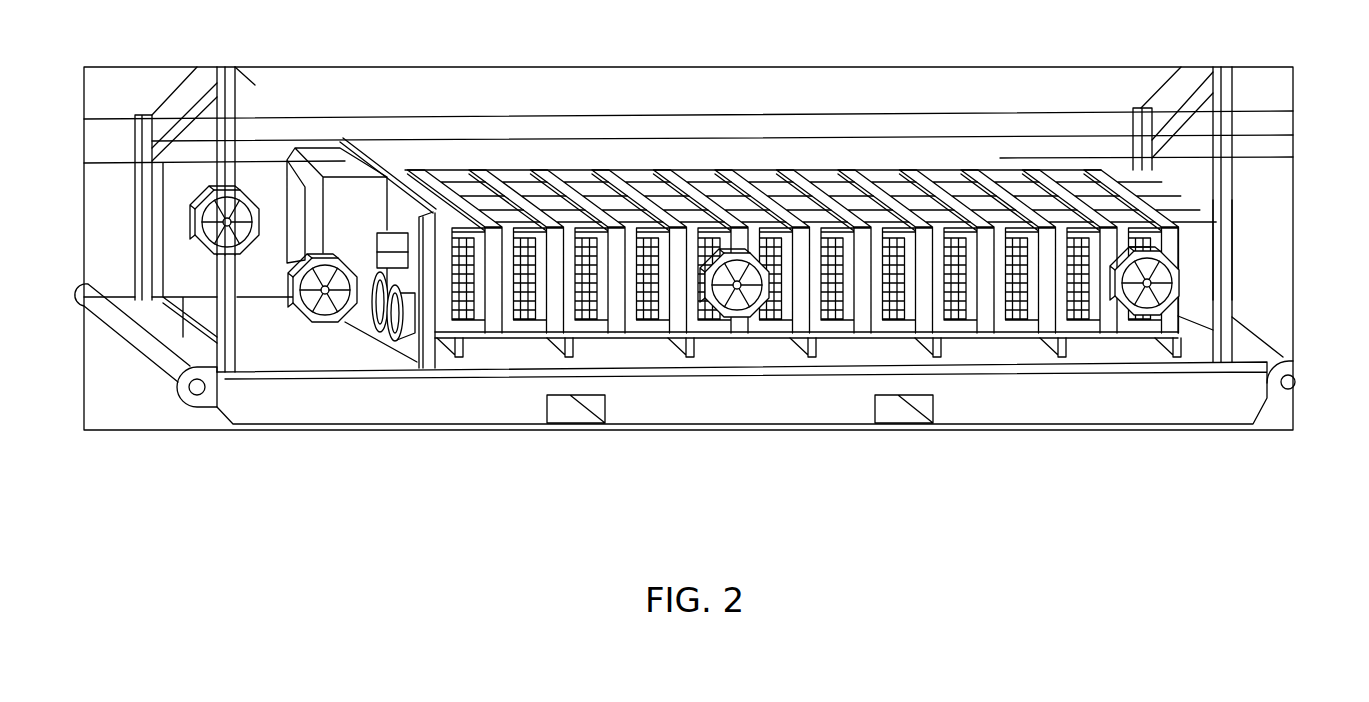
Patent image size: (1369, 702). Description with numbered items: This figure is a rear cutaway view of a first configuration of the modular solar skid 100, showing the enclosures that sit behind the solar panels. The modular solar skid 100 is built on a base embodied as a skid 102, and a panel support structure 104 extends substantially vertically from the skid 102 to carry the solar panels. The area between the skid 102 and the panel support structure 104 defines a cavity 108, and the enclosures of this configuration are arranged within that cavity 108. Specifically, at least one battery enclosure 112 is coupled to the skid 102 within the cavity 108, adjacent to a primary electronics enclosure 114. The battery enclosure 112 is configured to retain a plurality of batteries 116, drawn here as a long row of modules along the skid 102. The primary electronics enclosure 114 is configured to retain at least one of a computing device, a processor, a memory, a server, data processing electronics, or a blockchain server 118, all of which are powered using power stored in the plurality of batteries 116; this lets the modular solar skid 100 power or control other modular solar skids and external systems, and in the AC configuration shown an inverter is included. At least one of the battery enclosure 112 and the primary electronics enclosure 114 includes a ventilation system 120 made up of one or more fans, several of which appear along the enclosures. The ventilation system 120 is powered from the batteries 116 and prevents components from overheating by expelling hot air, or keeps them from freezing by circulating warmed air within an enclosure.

The modular solar skid 100 is at (1165, 45).
The skid 102 is at (577, 446).
The panel support structure 104 is at (1240, 206).
The cavity 108 is at (1242, 268).
The battery enclosure 112 is at (1198, 340).
The primary electronics enclosure 114 is at (170, 322).
The batteries 116 is at (956, 318).
The blockchain server 118 is at (350, 214).
The ventilation system 120 is at (249, 257).